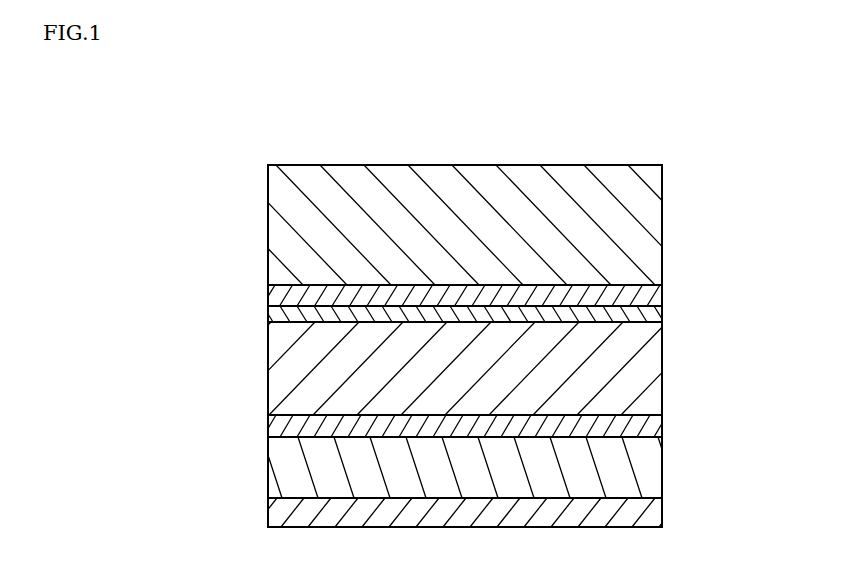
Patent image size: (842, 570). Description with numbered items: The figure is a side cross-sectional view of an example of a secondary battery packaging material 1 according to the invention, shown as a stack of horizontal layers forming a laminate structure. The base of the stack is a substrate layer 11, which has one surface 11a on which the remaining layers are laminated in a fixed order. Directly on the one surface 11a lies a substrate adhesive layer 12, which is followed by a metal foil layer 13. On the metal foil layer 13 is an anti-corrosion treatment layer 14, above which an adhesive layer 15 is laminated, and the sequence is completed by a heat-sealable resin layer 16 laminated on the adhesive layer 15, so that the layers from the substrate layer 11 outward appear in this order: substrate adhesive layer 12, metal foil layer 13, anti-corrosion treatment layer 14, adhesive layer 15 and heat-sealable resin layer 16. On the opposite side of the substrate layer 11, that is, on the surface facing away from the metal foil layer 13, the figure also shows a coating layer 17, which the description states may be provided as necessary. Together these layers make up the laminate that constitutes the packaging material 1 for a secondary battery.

The packaging material 1 is at (254, 147).
The substrate layer 11 is at (645, 467).
The one surface 11a is at (302, 434).
The substrate adhesive layer 12 is at (648, 427).
The metal foil layer 13 is at (645, 370).
The anti-corrosion treatment layer 14 is at (648, 313).
The adhesive layer 15 is at (648, 297).
The heat-sealable resin layer 16 is at (648, 226).
The coating layer 17 is at (648, 512).